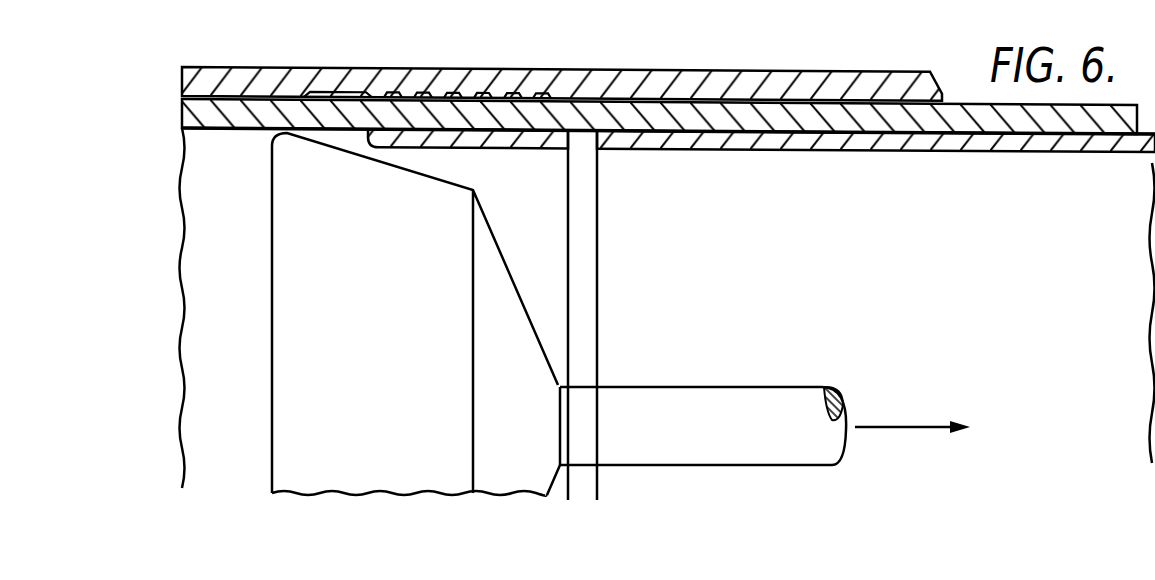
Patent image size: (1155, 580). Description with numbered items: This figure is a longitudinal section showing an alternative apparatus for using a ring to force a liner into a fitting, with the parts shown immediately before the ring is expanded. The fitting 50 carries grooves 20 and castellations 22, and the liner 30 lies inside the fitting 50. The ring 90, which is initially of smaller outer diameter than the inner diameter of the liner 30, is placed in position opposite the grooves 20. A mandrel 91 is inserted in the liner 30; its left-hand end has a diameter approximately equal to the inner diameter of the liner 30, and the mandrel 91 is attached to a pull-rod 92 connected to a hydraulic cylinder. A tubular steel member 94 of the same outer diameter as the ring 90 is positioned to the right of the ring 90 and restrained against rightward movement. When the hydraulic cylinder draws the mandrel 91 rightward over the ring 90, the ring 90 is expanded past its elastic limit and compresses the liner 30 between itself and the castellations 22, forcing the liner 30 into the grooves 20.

The grooves 20 is at (394, 93).
The castellations 22 is at (383, 93).
The liner 30 is at (259, 111).
The fitting 50 is at (211, 76).
The ring 90 is at (500, 134).
The mandrel 91 is at (402, 371).
The pull-rod 92 is at (745, 405).
The tubular steel member 94 is at (741, 136).